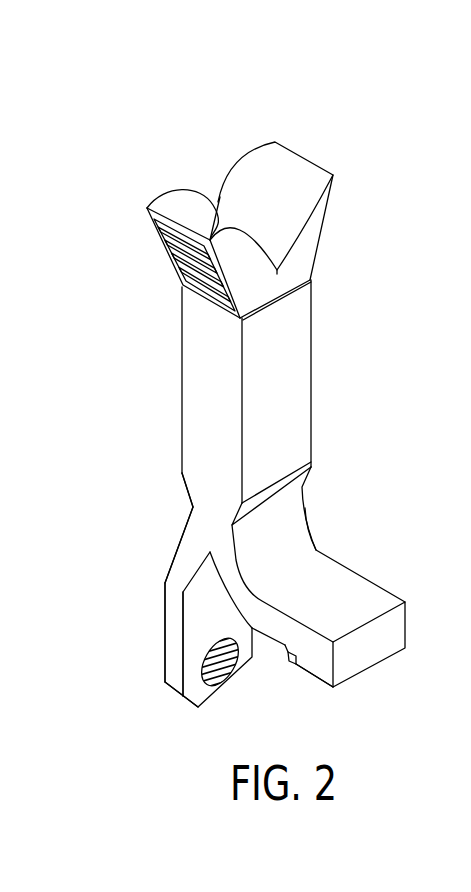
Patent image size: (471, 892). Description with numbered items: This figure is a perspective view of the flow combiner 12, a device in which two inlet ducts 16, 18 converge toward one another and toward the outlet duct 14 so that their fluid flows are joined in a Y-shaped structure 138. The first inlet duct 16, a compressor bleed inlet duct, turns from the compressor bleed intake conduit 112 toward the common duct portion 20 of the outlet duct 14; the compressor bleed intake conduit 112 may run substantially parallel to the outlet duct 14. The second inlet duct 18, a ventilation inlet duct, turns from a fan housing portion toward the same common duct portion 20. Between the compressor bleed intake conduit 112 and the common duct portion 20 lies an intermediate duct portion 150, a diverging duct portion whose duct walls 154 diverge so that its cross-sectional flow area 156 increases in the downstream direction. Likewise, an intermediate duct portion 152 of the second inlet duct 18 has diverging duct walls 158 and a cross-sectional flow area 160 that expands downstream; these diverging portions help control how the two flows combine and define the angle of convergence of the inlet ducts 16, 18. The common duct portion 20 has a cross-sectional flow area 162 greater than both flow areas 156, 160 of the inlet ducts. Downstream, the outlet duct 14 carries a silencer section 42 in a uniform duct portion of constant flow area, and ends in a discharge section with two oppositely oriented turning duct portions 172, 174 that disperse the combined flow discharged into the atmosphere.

The flow combiner 12 is at (324, 302).
The outlet duct 14 is at (182, 372).
The silencer section 42 is at (294, 383).
The turning duct portion 172 is at (165, 197).
The turning duct portion 174 is at (237, 165).
The inlet duct 16 is at (162, 633).
The compressor bleed intake conduit 112 is at (165, 662).
The Y-shaped structure 138 is at (175, 720).
The cross-sectional flow area 162 is at (186, 515).
The cross-sectional flow area 156 is at (163, 565).
The intermediate duct portion 150 is at (167, 583).
The duct walls 154 is at (220, 597).
The common duct portion 20 is at (237, 543).
The duct walls 158 is at (317, 548).
The intermediate duct portion 152 is at (368, 580).
The cross-sectional flow area 160 is at (277, 573).
The inlet duct 18 is at (277, 648).